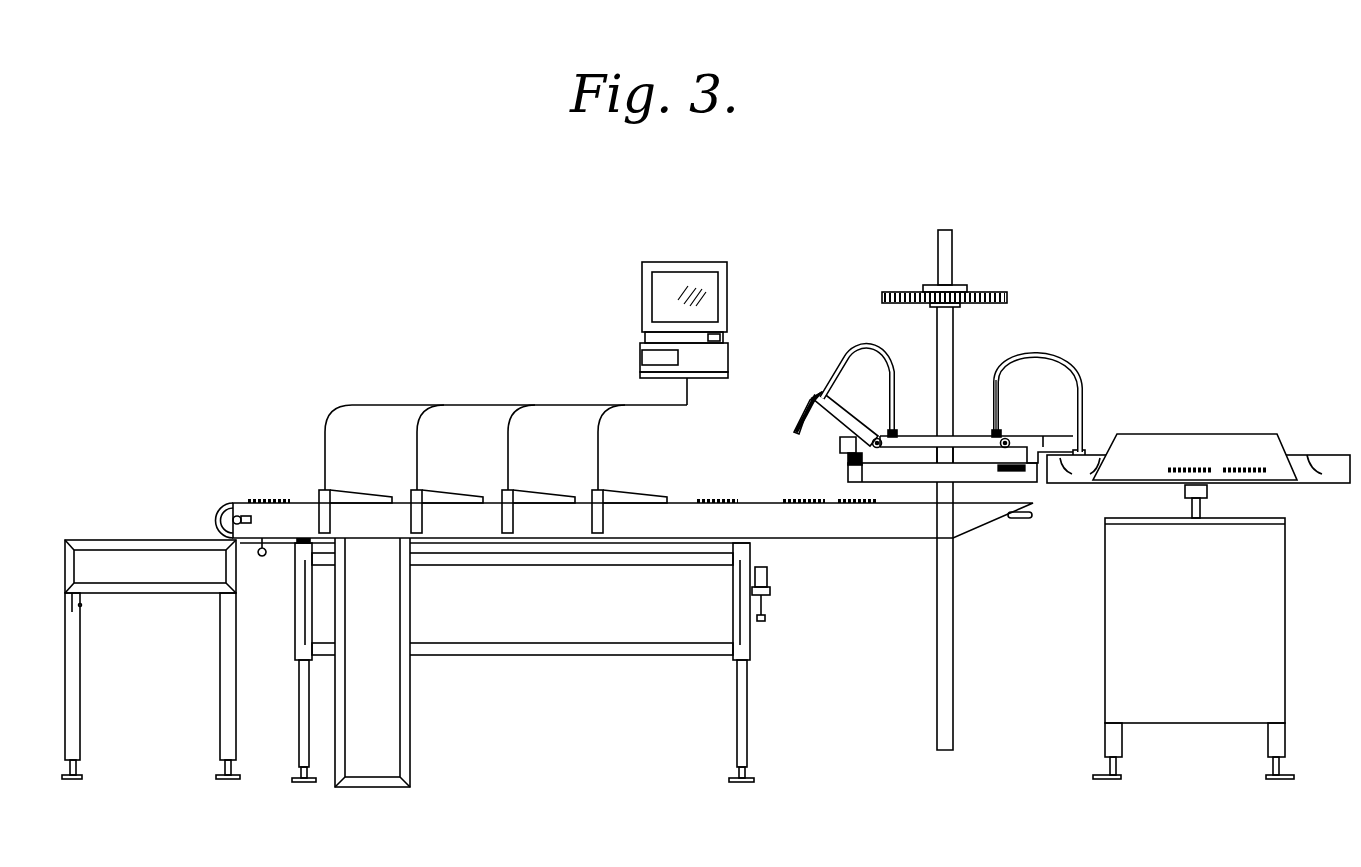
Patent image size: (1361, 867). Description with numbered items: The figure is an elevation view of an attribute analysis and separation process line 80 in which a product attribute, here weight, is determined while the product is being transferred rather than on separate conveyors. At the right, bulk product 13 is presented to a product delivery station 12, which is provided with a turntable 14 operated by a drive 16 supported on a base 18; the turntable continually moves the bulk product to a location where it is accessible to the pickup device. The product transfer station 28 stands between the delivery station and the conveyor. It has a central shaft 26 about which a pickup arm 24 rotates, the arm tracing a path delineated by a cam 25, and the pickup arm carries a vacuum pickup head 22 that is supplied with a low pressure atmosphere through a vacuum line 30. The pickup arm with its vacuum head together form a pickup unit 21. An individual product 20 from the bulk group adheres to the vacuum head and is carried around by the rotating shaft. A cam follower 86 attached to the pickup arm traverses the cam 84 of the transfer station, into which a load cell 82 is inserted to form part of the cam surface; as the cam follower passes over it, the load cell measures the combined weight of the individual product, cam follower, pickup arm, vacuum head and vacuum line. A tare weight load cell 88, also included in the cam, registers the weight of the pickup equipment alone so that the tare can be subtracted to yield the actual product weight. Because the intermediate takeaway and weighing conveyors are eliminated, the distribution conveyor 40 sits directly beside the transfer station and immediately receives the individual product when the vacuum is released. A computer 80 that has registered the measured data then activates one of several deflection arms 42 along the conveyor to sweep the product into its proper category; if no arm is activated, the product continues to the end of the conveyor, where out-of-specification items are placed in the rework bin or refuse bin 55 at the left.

The product delivery station 12 is at (1241, 405).
The bulk product 13 is at (1236, 468).
The turntable 14 is at (1330, 462).
The drive 16 is at (1200, 508).
The base 18 is at (1252, 624).
The individual product 20 is at (845, 499).
The pickup unit 21 is at (818, 318).
The vacuum pickup head 22 is at (800, 432).
The pickup arm 24 is at (835, 373).
The cam 25 is at (1000, 430).
The central shaft 26 is at (948, 257).
The product transfer station 28 is at (906, 262).
The vacuum line 30 is at (867, 350).
The distribution conveyor 40 is at (220, 497).
The deflection arms 42 is at (390, 498).
The rework bin or refuse bin 55 is at (170, 540).
The attribute analysis and separation process line 80 is at (656, 250).
The load cell 82 is at (1012, 478).
The cam 84 is at (962, 482).
The cam follower 86 is at (856, 440).
The tare weight load cell 88 is at (865, 466).